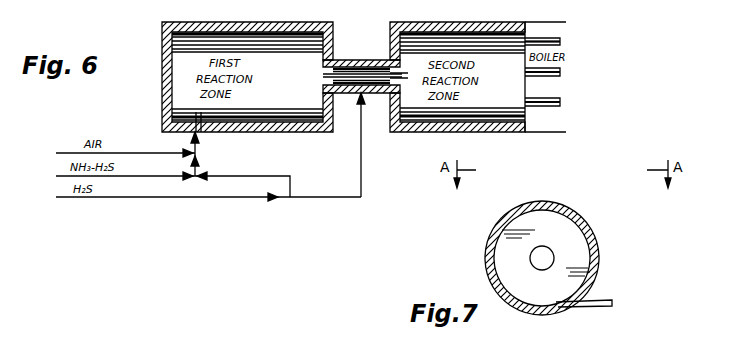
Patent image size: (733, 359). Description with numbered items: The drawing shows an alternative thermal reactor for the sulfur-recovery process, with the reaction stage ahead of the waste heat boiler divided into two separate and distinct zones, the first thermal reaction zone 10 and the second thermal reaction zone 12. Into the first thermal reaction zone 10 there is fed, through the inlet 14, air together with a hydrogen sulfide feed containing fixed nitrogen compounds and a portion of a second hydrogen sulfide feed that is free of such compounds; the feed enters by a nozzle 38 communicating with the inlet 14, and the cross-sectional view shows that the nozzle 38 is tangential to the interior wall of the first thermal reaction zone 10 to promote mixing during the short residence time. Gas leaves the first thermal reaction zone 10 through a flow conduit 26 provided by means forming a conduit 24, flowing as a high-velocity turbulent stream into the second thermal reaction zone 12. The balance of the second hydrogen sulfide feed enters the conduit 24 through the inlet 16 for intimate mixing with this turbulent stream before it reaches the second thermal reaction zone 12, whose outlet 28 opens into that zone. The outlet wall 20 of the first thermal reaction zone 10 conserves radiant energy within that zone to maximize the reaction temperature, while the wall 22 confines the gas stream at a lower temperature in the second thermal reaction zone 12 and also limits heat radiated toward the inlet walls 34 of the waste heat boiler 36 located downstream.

In FIG. 6, the first thermal reaction zone 10 is at (271, 30).
In FIG. 6, the second thermal reaction zone 12 is at (487, 40).
In FIG. 6, the inlet 14 is at (203, 134).
In FIG. 6, the inlet 16 is at (363, 97).
In FIG. 6, the outlet wall 20 is at (316, 30).
In FIG. 7, the outlet wall 20 is at (562, 232).
In FIG. 6, the wall 22 is at (405, 32).
In FIG. 6, the conduit 24 is at (344, 58).
In FIG. 6, the flow conduit 26 is at (323, 79).
In FIG. 7, the flow conduit 26 is at (540, 263).
In FIG. 6, the outlet of conduit into second reaction zone 28 is at (393, 78).
In FIG. 6, the inlet walls 34 is at (533, 67).
In FIG. 6, the waste heat boiler 36 is at (563, 12).
In FIG. 6, the nozzle 38 is at (200, 120).
In FIG. 7, the nozzle 38 is at (588, 308).